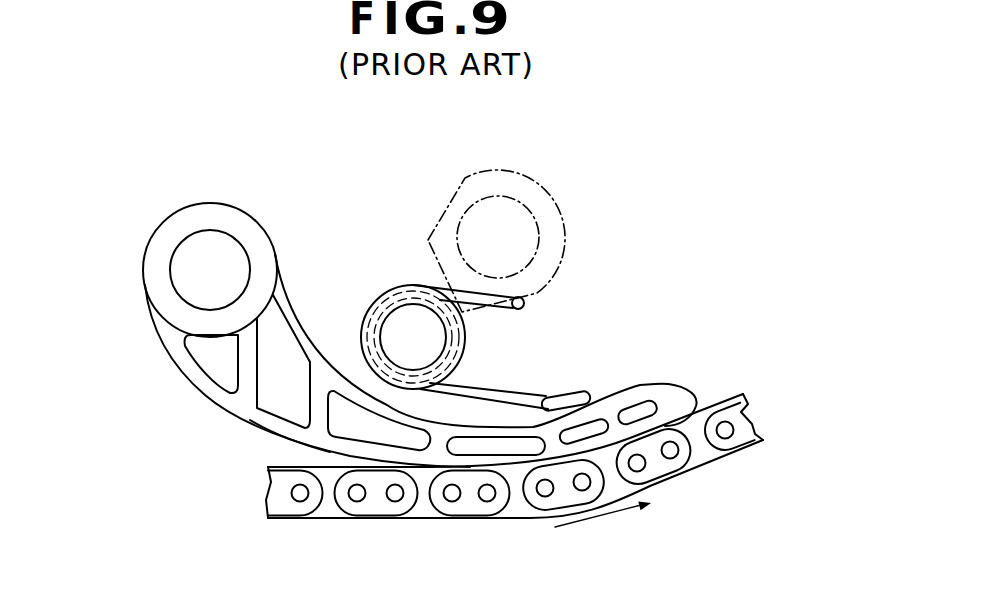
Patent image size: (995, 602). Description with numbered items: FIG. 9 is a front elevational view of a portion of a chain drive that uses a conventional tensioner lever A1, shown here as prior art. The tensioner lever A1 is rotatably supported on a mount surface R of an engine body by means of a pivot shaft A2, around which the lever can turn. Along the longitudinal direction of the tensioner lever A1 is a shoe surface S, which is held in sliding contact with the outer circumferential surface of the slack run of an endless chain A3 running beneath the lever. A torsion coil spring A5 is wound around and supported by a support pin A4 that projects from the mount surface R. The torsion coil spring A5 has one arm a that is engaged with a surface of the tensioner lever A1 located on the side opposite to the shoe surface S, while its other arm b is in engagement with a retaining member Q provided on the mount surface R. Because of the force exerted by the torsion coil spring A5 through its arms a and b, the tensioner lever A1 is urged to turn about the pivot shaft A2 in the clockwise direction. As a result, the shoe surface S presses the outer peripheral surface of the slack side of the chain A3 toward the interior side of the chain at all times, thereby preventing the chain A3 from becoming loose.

The tensioner lever A1 is at (173, 385).
The pivot shaft A2 is at (210, 250).
The endless chain A3 is at (423, 505).
The support pin A4 is at (437, 340).
The torsion coil spring A5 is at (372, 289).
The retaining member Q is at (558, 222).
The one arm of torsion coil spring a is at (545, 398).
The other arm of torsion coil spring b is at (497, 311).
The shoe surface S is at (298, 452).
The mount surface R is at (346, 189).